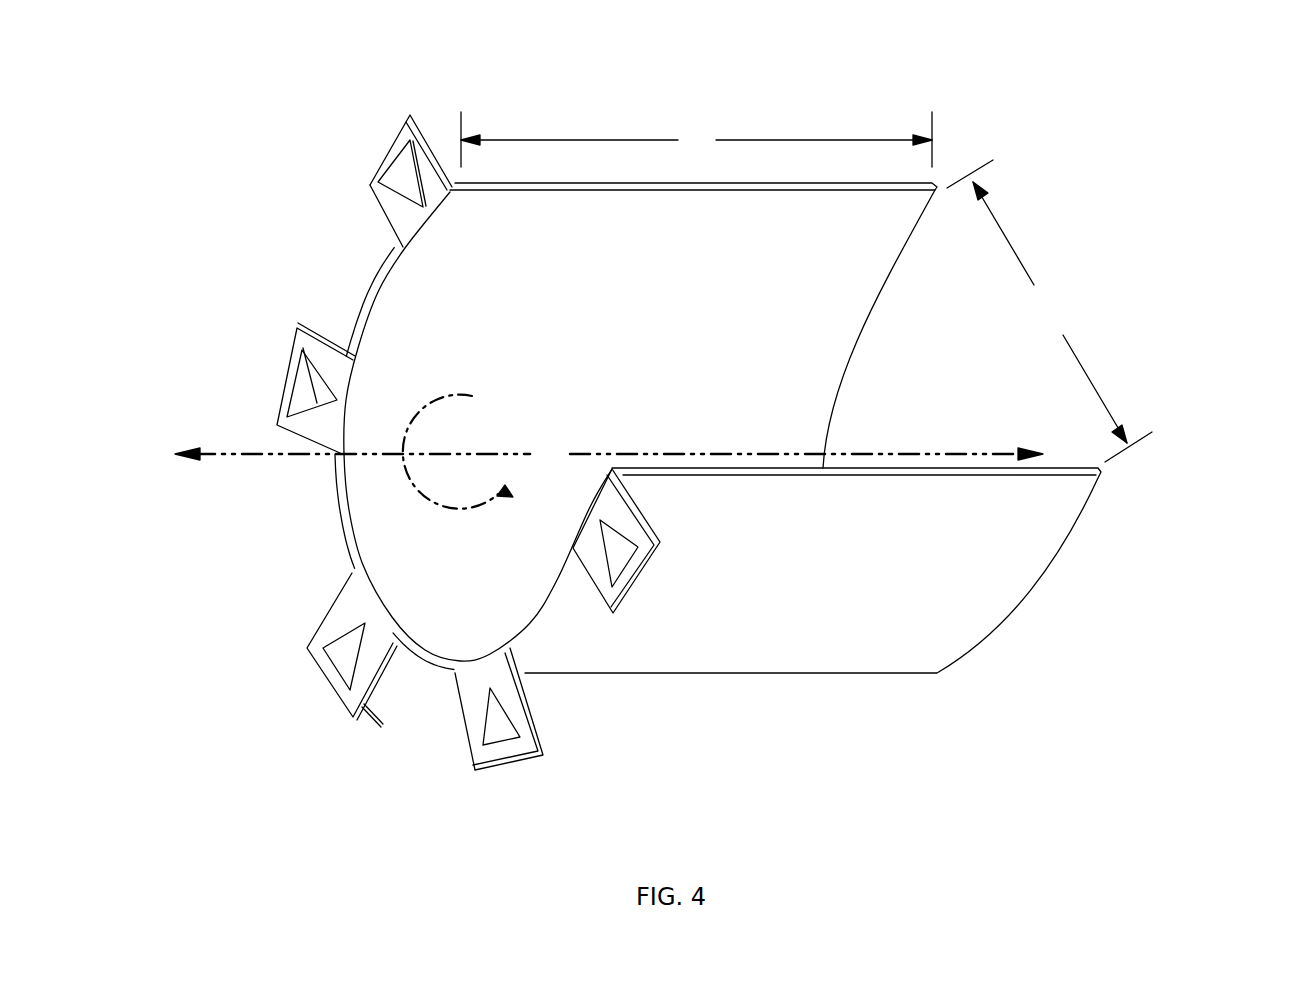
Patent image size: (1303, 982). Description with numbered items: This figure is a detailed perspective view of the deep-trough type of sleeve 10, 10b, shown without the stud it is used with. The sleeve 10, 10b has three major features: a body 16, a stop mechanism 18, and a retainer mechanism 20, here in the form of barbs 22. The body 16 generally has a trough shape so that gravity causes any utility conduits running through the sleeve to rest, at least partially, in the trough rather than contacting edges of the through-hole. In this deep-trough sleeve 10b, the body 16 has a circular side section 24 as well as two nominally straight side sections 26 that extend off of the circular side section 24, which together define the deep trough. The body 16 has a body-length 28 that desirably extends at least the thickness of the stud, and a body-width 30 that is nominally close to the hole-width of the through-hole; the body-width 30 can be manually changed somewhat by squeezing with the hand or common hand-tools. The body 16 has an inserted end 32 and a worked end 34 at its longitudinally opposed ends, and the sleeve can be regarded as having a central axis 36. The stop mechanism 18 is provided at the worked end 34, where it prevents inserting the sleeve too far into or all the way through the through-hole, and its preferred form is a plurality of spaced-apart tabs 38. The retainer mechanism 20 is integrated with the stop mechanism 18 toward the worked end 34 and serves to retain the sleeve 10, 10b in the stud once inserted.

The sleeve 10 is at (704, 428).
The deep-trough sleeve 10b is at (704, 428).
The body 16 is at (755, 673).
The stop mechanism 18 is at (652, 470).
The retainer mechanism 20 is at (458, 452).
The barbs 22 is at (395, 190).
The circular side section 24 is at (417, 431).
The straight side sections 26 is at (775, 463).
The body-length 28 is at (696, 139).
The body-width 30 is at (633, 585).
The inserted end 32 is at (857, 332).
The worked end 34 is at (335, 525).
The central axis 36 is at (609, 445).
The tabs 38 is at (378, 203).